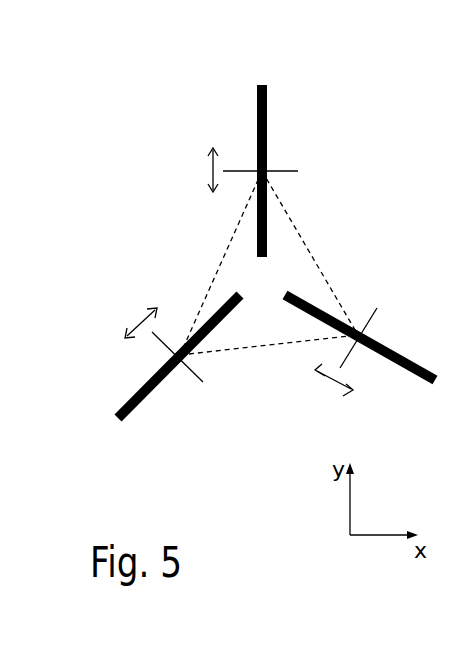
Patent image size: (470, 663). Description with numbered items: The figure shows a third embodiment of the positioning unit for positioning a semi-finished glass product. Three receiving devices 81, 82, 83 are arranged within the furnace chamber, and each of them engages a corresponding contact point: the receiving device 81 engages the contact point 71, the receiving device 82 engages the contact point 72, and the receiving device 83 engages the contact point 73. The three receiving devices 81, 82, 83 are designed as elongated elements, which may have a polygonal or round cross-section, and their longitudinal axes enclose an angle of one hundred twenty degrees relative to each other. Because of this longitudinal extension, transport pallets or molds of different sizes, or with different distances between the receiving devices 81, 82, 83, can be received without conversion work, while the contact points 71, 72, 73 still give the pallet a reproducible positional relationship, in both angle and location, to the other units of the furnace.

The receiving device 81 is at (256, 103).
The contact point 71 is at (280, 162).
The receiving device 82 is at (405, 378).
The contact point 72 is at (370, 328).
The receiving device 83 is at (130, 403).
The contact point 73 is at (176, 381).